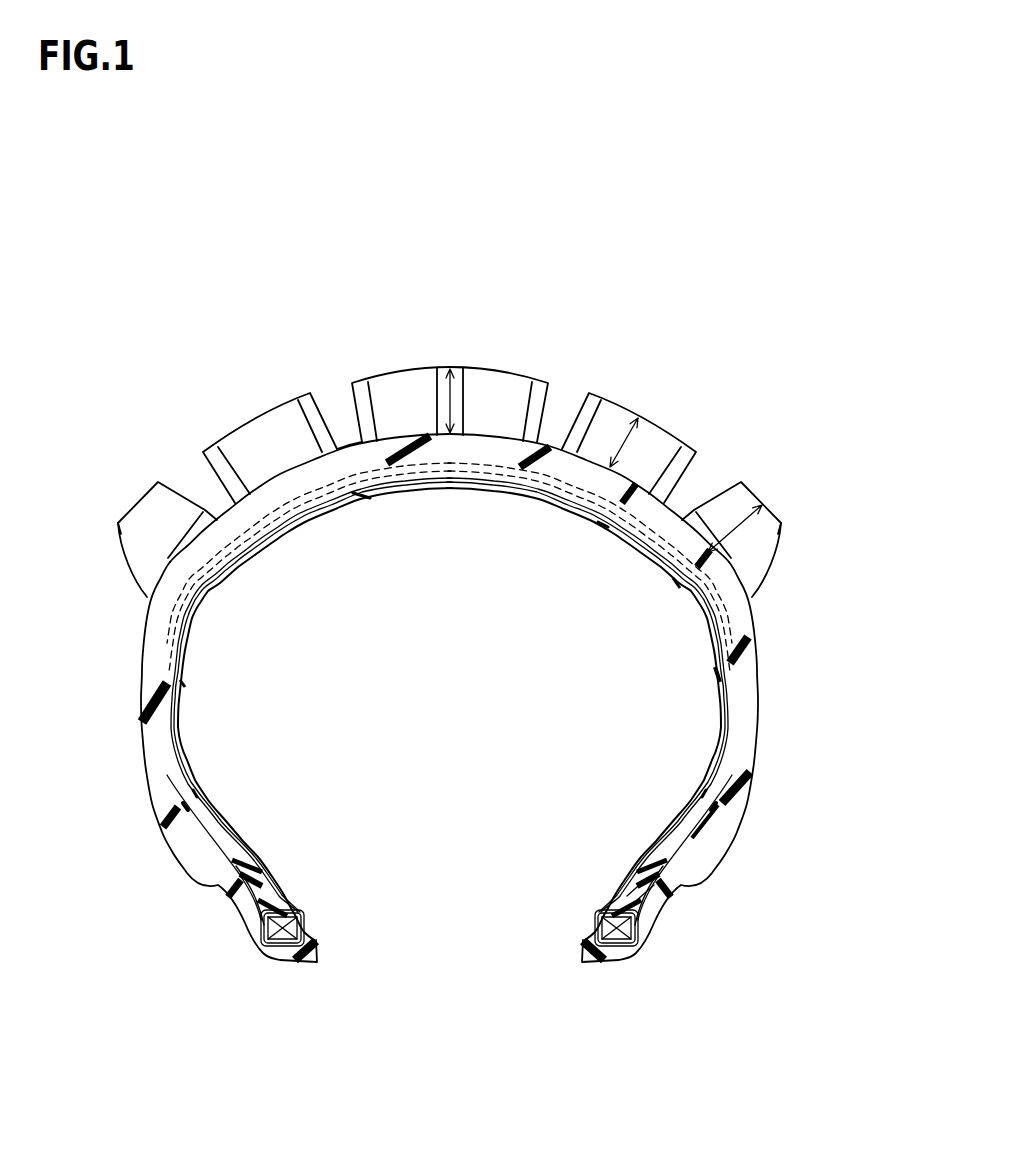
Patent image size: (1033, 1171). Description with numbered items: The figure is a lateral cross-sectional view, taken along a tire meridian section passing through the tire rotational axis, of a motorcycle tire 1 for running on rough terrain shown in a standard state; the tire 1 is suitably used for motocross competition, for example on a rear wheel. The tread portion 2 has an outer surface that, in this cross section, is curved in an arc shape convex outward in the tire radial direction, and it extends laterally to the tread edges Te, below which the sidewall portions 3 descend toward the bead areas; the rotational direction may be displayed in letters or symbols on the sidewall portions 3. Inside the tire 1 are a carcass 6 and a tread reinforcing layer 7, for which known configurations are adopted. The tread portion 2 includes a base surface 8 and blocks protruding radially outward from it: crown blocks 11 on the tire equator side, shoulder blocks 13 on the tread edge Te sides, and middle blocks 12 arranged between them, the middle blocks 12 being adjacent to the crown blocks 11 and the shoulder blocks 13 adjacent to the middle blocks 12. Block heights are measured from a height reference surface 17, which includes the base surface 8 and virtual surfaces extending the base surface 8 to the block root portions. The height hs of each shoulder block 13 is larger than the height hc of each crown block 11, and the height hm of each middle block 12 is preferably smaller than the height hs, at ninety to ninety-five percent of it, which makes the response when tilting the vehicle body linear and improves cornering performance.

The motorcycle tire 1 is at (770, 333).
The tread portion 2 is at (530, 365).
The sidewall portions 3 is at (132, 735).
The carcass 6 is at (727, 745).
The tread reinforcing layer 7 is at (488, 470).
The base surface 8 is at (346, 441).
The crown blocks 11 is at (383, 368).
The middle blocks 12 is at (240, 425).
The shoulder blocks 13 is at (135, 498).
The height reference surface 17 is at (483, 437).
The height of crown block hc is at (447, 398).
The height of middle block hm is at (624, 443).
The height of shoulder block hs is at (737, 528).
The tread edge Te is at (118, 523).